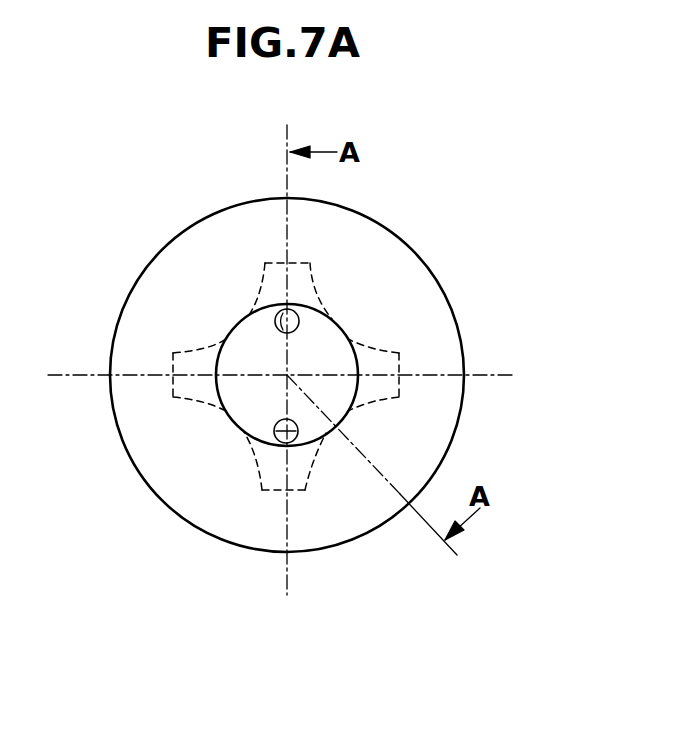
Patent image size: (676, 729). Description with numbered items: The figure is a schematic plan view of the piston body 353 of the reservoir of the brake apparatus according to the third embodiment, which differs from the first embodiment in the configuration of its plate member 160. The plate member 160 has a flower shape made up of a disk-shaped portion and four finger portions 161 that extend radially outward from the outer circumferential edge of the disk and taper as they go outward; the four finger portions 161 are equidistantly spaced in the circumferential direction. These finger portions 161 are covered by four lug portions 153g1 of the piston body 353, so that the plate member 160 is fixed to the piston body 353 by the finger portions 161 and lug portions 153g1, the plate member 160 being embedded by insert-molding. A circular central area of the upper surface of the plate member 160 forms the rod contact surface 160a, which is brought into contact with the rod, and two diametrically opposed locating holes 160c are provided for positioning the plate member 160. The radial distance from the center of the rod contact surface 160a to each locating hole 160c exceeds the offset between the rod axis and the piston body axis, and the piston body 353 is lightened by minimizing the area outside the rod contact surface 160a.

The piston body 353 is at (483, 255).
The plate member 160 is at (284, 409).
The rod contact surface 160a is at (256, 402).
The locating holes 160c is at (275, 322).
The lug portions 153g1 is at (280, 292).
The finger portions 161 is at (298, 262).